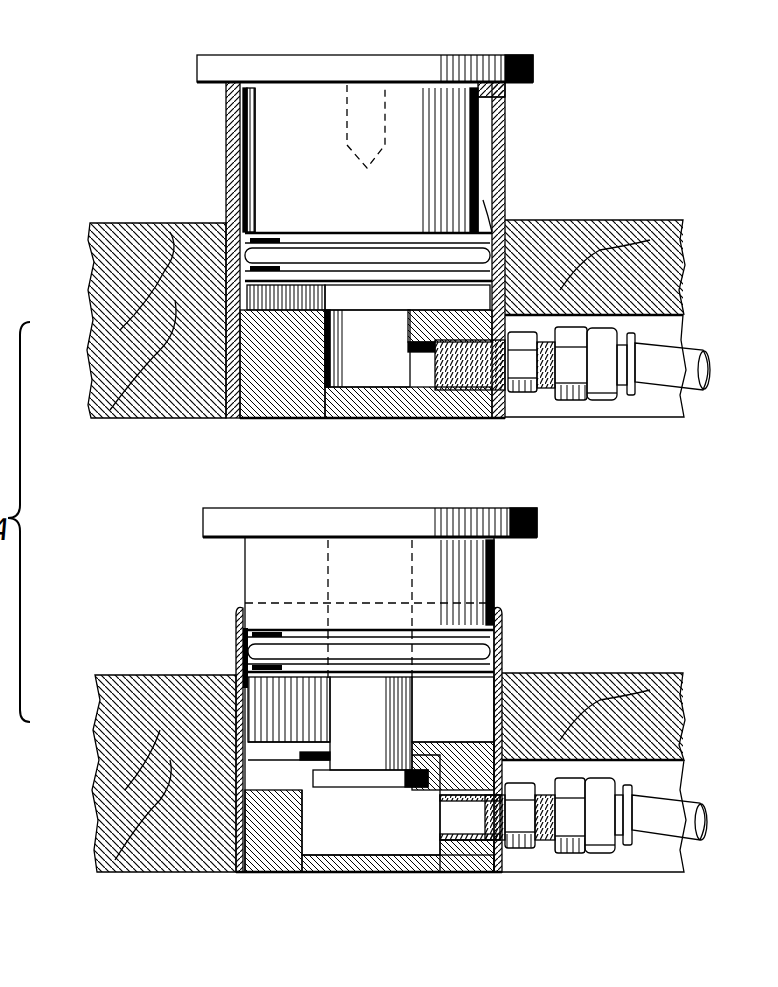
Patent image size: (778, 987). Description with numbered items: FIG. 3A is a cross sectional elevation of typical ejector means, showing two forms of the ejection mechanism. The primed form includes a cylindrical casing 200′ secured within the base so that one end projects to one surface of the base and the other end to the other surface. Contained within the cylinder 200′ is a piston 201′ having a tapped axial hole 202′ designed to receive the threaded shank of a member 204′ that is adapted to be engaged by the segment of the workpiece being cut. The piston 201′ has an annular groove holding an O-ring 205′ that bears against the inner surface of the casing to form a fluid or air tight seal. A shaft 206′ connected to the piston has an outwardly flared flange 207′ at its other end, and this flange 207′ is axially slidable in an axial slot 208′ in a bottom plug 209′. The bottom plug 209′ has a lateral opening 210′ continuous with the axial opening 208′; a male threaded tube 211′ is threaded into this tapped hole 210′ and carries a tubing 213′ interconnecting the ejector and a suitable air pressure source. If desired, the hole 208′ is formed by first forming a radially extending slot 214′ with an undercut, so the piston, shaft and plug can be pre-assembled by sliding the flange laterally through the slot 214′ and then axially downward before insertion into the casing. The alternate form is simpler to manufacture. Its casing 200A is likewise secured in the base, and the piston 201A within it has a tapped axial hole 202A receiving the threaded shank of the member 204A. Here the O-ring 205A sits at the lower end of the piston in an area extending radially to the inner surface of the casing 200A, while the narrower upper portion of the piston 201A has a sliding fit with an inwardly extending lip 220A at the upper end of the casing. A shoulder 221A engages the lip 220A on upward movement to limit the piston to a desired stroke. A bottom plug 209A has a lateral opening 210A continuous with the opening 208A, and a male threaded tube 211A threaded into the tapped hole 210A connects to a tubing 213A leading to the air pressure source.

The casing 200A is at (226, 143).
The piston 201A is at (455, 152).
The tapped axial hole 202A is at (358, 113).
The member 204A is at (307, 68).
The O-ring 205A is at (355, 262).
The opening 208A is at (398, 300).
The bottom plug 209A is at (280, 400).
The lateral opening 210A is at (470, 392).
The male threaded tube 211A is at (455, 392).
The tube 213A is at (667, 345).
The inwardly extending lip 220A is at (505, 90).
The shoulder 221A is at (492, 228).
The cylindrical casing 200′ is at (236, 643).
The piston 201′ is at (470, 578).
The tapped axial hole 202′ is at (360, 572).
The top plate 204′ is at (360, 520).
The O-ring 205′ is at (502, 650).
The shaft 206′ is at (385, 700).
The outwardly flared flange 207′ is at (372, 790).
The axial slot 208′ is at (345, 835).
The bottom plug 209′ is at (277, 850).
The lateral opening 210′ is at (450, 832).
The male threaded tube 211′ is at (490, 870).
The tubing 213′ is at (660, 800).
The radially extending slot 214′ is at (262, 776).